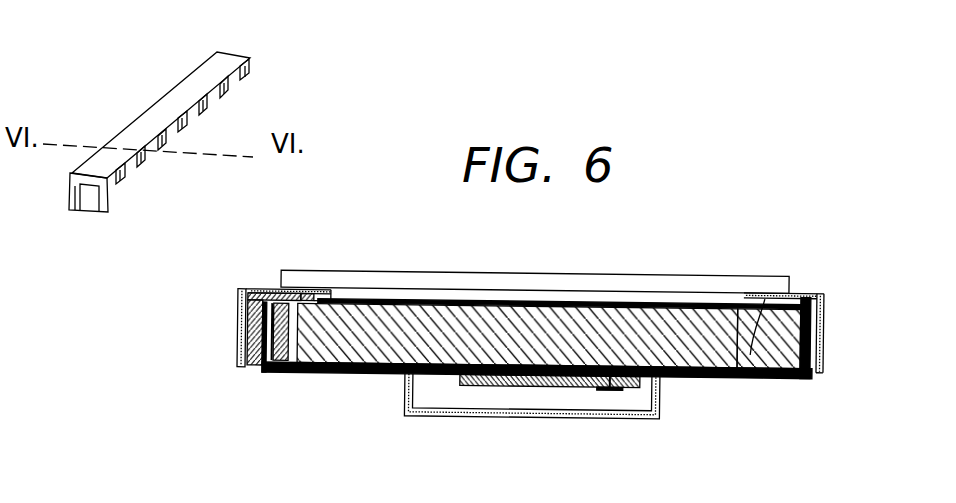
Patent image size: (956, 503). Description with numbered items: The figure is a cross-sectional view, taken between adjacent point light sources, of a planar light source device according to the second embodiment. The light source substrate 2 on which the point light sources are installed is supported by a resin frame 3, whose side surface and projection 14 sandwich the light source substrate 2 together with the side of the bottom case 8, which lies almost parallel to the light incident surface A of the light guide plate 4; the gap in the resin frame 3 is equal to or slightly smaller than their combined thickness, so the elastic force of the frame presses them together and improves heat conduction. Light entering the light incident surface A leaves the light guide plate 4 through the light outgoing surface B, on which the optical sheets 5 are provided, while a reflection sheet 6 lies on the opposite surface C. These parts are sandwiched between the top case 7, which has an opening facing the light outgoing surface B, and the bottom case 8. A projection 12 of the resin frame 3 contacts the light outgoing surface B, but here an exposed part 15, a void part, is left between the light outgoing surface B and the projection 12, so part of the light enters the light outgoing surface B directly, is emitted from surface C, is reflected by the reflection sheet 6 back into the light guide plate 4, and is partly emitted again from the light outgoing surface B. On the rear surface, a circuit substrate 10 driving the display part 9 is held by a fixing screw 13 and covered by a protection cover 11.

The light source substrate 2 is at (267, 373).
The resin frame 3 is at (213, 67).
The light guide plate 4 is at (737, 318).
The optical sheets 5 is at (633, 318).
The reflection sheet 6 is at (291, 373).
The top case 7 is at (240, 292).
The bottom case 8 is at (380, 374).
The display part 9 is at (440, 268).
The circuit substrate 10 is at (533, 385).
The protection cover 11 is at (440, 416).
The projection 12 is at (307, 295).
The fixing screw 13 is at (616, 392).
The projection 14 is at (265, 293).
The exposed part 15 is at (302, 295).
The light incident surface A is at (247, 354).
The light outgoing surface B is at (803, 295).
The surface opposite to the light outgoing surface C is at (765, 292).